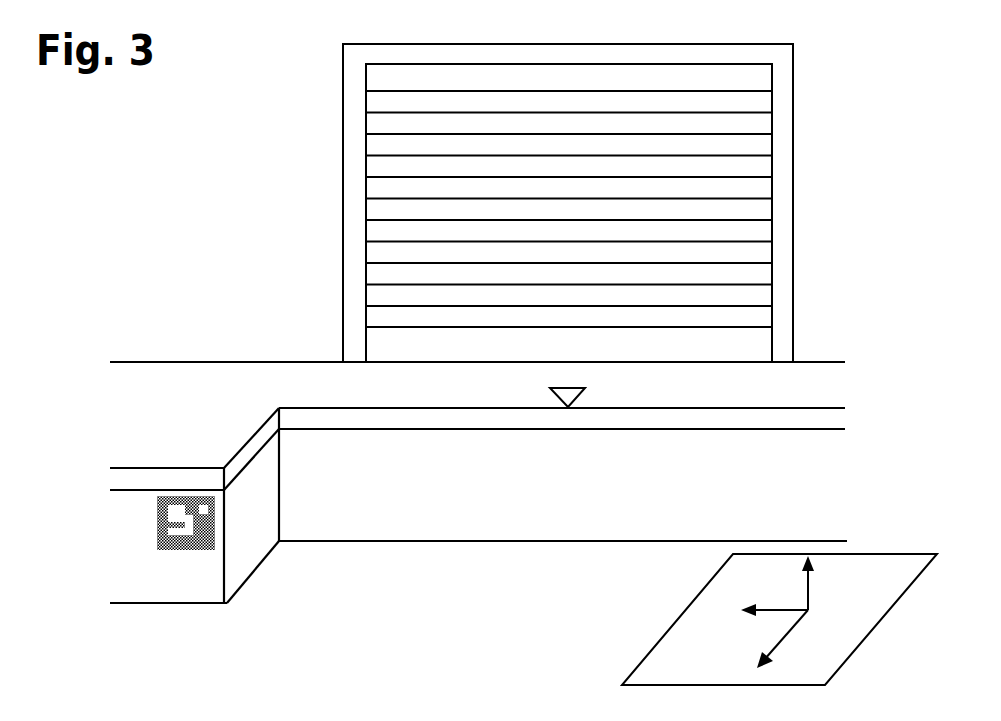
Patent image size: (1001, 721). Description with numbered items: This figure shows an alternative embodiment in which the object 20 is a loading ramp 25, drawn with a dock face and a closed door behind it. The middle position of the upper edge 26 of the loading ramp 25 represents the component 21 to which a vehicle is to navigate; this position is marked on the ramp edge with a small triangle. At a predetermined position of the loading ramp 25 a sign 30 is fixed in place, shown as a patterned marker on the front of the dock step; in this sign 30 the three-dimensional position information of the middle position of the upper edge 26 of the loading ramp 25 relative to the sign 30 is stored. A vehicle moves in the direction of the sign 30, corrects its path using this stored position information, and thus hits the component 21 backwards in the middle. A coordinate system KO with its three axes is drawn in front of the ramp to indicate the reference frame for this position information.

The object 20 is at (242, 311).
The loading ramp 25 is at (221, 409).
The sign 30 is at (157, 540).
The component 21 is at (571, 384).
The upper edge 26 is at (567, 397).
The coordinate system KO is at (641, 657).